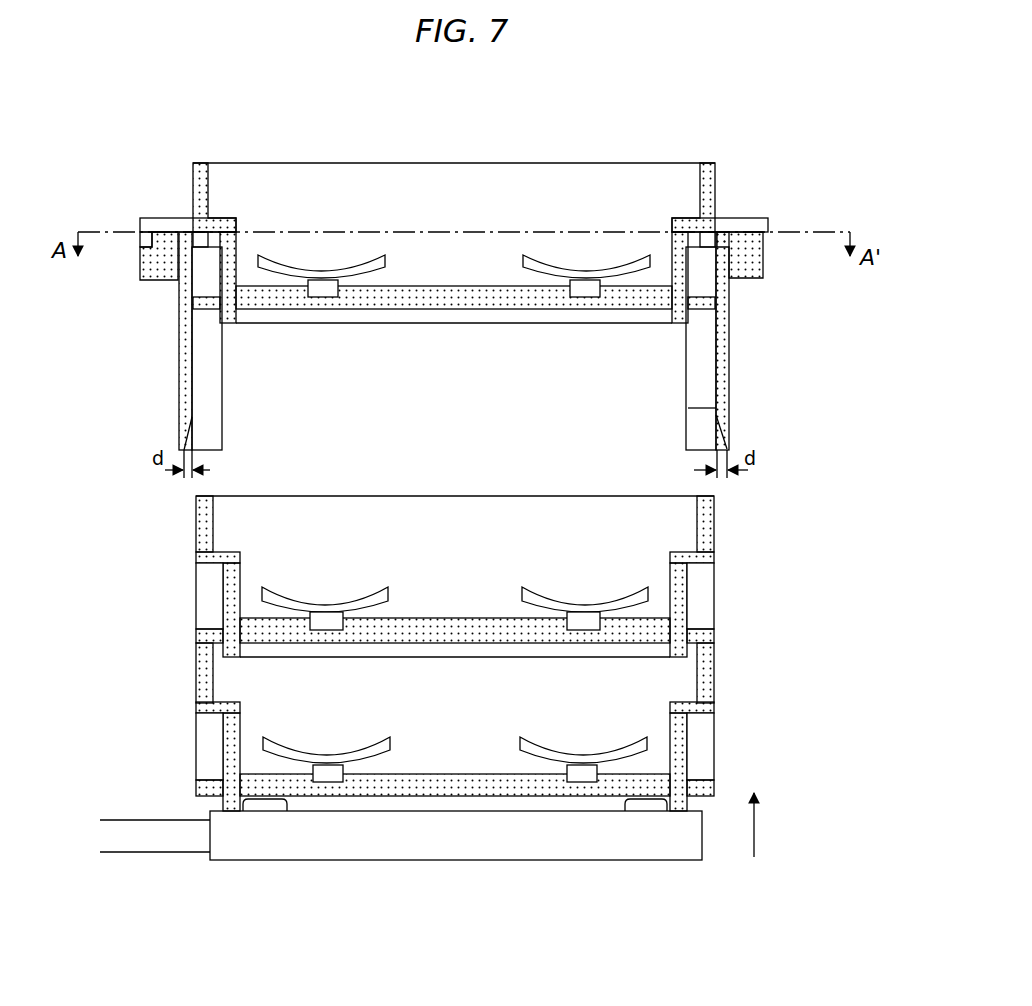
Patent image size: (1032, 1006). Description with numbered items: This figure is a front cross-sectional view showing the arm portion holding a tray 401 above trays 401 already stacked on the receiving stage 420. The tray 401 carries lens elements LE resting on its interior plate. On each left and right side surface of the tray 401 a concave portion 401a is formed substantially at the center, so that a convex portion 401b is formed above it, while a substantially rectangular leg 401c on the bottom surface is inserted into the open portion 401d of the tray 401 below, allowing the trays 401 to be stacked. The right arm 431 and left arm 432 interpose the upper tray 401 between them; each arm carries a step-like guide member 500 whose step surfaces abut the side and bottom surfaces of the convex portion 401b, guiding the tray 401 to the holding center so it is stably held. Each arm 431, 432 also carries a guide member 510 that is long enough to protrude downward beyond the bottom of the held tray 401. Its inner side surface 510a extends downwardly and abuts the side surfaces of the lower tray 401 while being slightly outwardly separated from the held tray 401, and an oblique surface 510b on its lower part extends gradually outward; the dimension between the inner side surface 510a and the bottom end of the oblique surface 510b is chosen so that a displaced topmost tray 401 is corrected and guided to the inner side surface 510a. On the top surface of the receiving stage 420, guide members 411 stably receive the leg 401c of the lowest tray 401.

The tray 401 is at (413, 162).
The concave portion 401a is at (200, 290).
The convex portion 401b is at (194, 190).
The leg 401c is at (228, 323).
The open portion 401d is at (338, 180).
The guide member 500 is at (165, 218).
The right arm 431 is at (760, 262).
The left arm 432 is at (152, 262).
The guide member 510 is at (183, 347).
The inner side surface 510a is at (195, 382).
The oblique surface 510b is at (190, 437).
The guide member 411 is at (265, 807).
The receiving stage 420 is at (472, 845).
The lens element LE is at (385, 258).